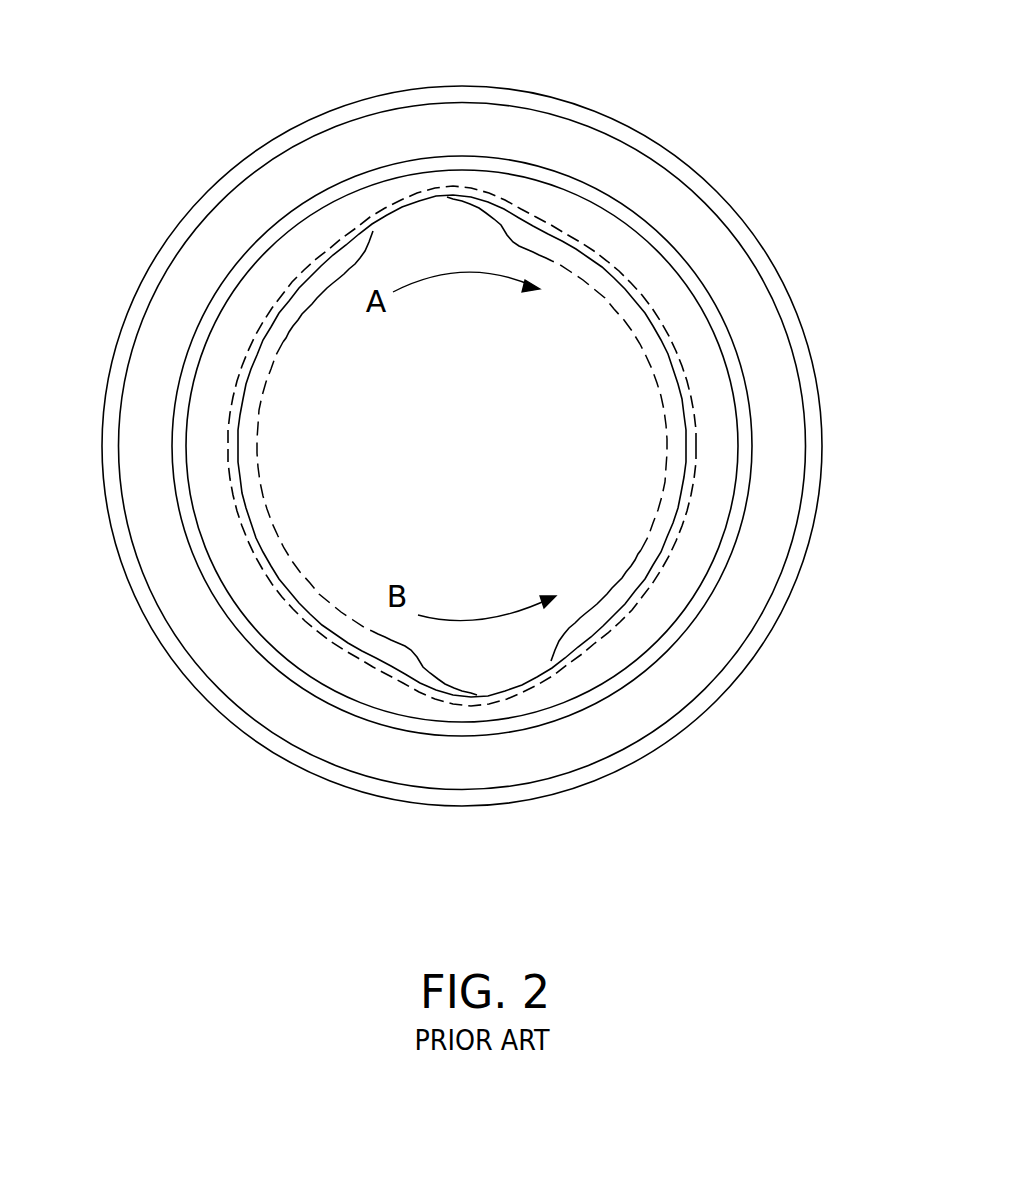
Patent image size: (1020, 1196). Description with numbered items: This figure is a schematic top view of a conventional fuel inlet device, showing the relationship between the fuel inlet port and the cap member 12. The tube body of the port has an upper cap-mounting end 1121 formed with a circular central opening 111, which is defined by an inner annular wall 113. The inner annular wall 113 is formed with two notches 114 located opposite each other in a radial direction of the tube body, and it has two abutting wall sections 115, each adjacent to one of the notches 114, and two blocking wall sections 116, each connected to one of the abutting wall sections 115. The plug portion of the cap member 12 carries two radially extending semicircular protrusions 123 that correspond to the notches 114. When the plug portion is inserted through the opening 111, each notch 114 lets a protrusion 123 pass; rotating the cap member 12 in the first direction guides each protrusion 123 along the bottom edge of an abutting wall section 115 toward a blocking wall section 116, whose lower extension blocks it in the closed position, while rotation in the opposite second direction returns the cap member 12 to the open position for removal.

The upper cap-mounting end 1121 is at (740, 218).
The circular central opening 111 is at (673, 487).
The inner annular wall 113 is at (687, 369).
The abutting wall section 115 is at (237, 381).
The cap member 12 is at (597, 522).
The notch 114 is at (512, 221).
The blocking wall section 116 is at (367, 242).
The semicircular protrusion 123 is at (453, 225).